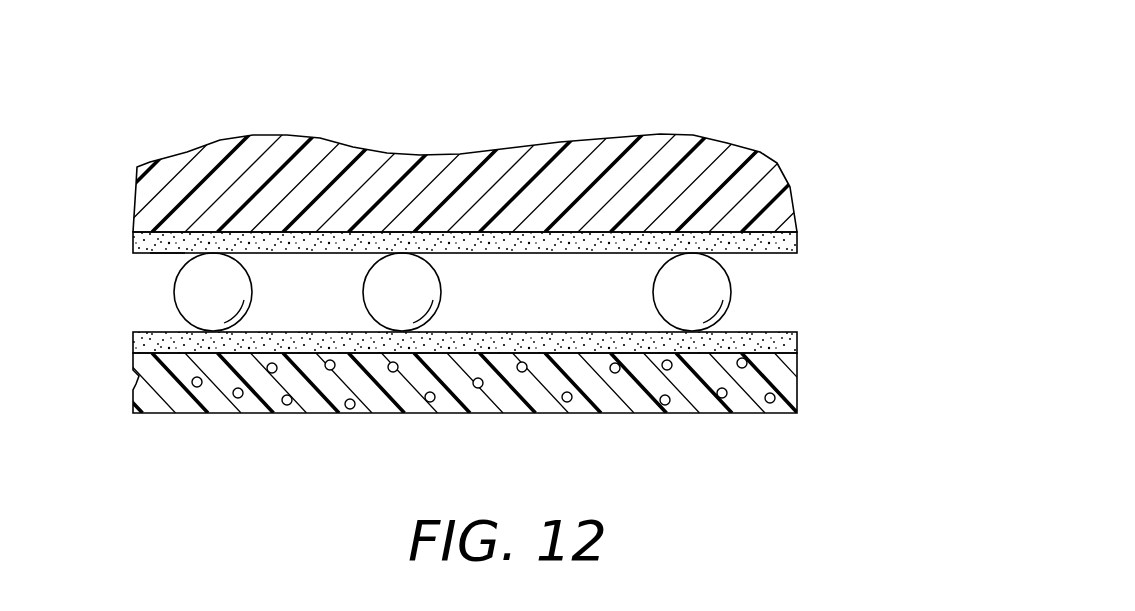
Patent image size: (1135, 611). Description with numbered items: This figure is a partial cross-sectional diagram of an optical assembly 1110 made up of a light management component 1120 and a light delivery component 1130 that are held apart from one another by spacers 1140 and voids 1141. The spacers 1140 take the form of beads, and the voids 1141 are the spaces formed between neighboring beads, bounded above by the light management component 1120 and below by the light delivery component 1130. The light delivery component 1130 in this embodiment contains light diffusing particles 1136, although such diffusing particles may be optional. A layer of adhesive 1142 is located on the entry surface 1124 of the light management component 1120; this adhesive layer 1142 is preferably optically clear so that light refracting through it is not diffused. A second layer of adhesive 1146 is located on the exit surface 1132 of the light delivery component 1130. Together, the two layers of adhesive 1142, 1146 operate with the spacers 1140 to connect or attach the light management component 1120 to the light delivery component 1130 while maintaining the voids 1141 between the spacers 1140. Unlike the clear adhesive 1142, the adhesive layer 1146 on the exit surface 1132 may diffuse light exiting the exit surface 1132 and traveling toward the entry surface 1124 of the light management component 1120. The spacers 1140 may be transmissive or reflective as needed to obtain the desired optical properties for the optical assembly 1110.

The optical assembly 1110 is at (681, 90).
The light management component 1120 is at (775, 170).
The layer of adhesive 1142 is at (800, 239).
The entry surface 1124 is at (167, 255).
The spacers 1140 is at (400, 277).
The voids 1141 is at (337, 310).
The exit surface 1132 is at (508, 332).
The layer of adhesive 1146 is at (782, 342).
The light delivery component 1130 is at (788, 387).
The light diffusing particles 1136 is at (566, 402).